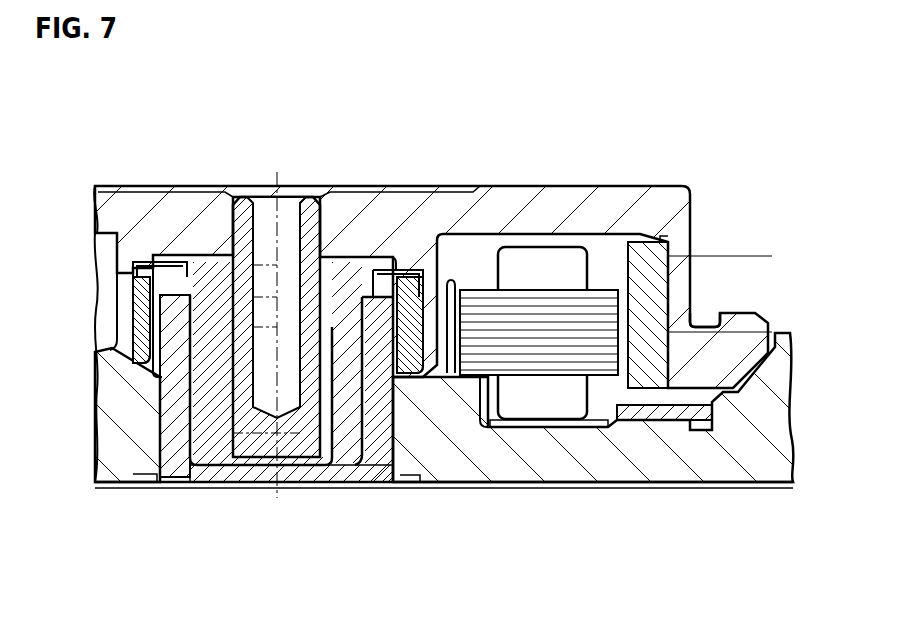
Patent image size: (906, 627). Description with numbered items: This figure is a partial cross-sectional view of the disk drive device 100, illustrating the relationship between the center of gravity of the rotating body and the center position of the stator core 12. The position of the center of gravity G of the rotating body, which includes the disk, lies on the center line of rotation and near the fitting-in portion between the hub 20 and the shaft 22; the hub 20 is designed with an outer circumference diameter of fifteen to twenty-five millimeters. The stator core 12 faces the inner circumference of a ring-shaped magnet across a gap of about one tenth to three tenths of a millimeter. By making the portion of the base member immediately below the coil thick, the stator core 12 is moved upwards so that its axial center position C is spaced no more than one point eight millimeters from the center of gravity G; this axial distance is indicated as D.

The hub 20 is at (373, 203).
The stator core 12 is at (600, 297).
The shaft 22 is at (304, 428).
The position of the center of gravity of the rotating body G is at (300, 255).
The distance in the axial direction D is at (757, 256).
The center position in the axial direction of the stator core C is at (720, 333).
The disk drive device 100 is at (435, 597).